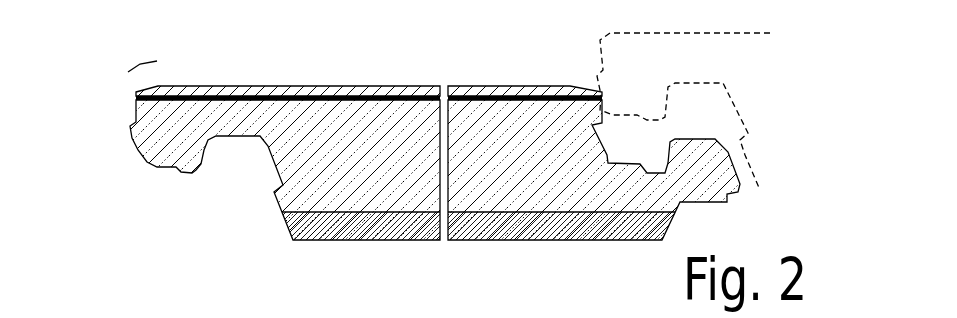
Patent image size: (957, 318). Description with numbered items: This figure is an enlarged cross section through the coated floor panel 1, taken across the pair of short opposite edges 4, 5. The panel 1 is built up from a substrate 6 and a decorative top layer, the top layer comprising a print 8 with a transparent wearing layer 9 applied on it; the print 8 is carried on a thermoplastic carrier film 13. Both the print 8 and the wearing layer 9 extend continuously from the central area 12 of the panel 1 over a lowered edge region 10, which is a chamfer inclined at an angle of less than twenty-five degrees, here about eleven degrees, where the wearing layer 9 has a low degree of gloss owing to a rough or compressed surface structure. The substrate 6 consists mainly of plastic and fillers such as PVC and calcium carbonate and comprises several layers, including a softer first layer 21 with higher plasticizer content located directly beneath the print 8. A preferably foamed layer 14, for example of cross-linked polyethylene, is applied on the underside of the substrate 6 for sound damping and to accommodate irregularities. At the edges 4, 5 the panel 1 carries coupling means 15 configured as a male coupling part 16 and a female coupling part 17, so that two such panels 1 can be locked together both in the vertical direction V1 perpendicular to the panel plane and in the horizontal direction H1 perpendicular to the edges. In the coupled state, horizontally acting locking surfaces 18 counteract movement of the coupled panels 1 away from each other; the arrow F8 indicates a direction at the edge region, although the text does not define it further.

The coated panel 1 is at (484, 78).
The short opposite edge 4 is at (149, 189).
The short opposite edge 5 is at (640, 135).
The substrate 6 is at (355, 165).
The print 8 is at (411, 95).
The transparent wearing layer 9 is at (292, 90).
The lowered edge region 10 is at (140, 64).
The central area 12 is at (336, 90).
The thermoplastic carrier film 13 is at (218, 96).
The foamed layer 14 is at (540, 230).
The coupling means 15 is at (163, 195).
The male coupling part 16 is at (170, 136).
The female coupling part 17 is at (630, 185).
The horizontally acting locking surface 18 is at (208, 166).
The first layer 21 is at (558, 99).
The force direction F8 is at (113, 88).
The vertical direction V1 is at (233, 293).
The horizontal direction H1 is at (279, 253).